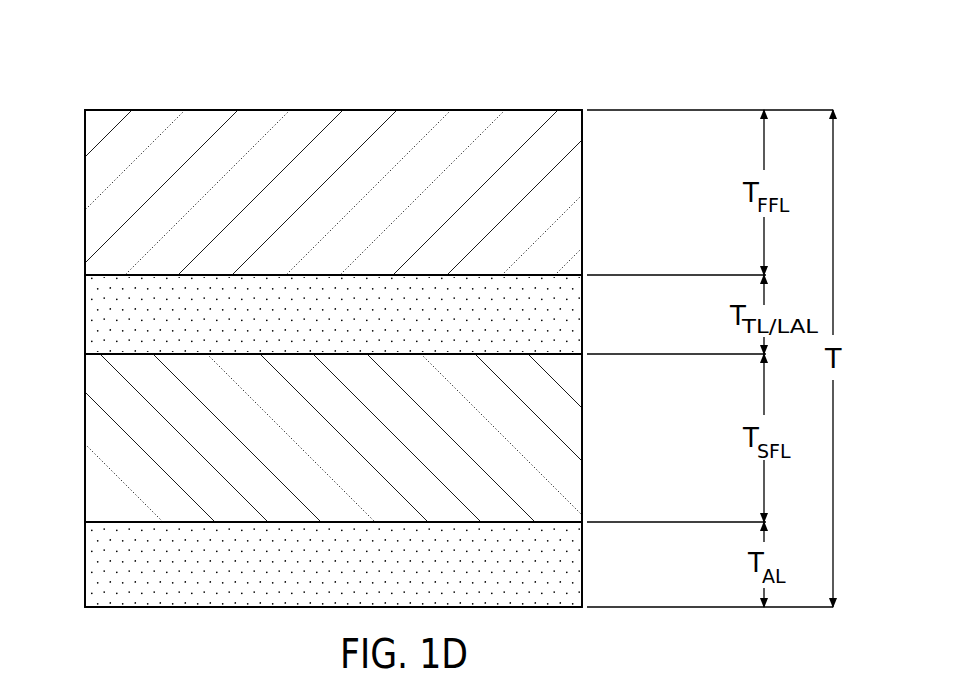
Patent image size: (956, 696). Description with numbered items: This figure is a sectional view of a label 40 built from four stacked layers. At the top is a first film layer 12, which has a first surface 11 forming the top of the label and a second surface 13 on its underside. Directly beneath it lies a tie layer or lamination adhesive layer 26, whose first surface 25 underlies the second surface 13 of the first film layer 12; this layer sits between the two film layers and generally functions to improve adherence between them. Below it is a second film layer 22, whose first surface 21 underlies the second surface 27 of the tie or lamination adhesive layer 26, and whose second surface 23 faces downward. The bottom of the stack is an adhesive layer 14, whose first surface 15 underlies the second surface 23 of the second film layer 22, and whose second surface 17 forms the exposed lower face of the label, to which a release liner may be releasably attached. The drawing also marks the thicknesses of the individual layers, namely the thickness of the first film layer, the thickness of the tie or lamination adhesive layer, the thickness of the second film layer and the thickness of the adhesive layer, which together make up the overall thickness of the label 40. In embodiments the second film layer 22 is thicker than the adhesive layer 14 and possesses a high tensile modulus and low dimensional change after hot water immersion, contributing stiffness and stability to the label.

The label 40 is at (536, 85).
The first surface of first film layer 11 is at (103, 109).
The first film layer 12 is at (582, 197).
The second surface of first film layer 13 is at (105, 275).
The first surface of tie or lamination adhesive layer 25 is at (140, 275).
The tie layer or lamination adhesive layer 26 is at (582, 325).
The second surface of tie or lamination adhesive layer 27 is at (105, 354).
The first surface of second film layer 21 is at (140, 354).
The second film layer 22 is at (582, 437).
The second surface of second film layer 23 is at (105, 522).
The first surface of adhesive layer 15 is at (140, 522).
The adhesive layer 14 is at (582, 570).
The second surface of adhesive layer 17 is at (105, 607).